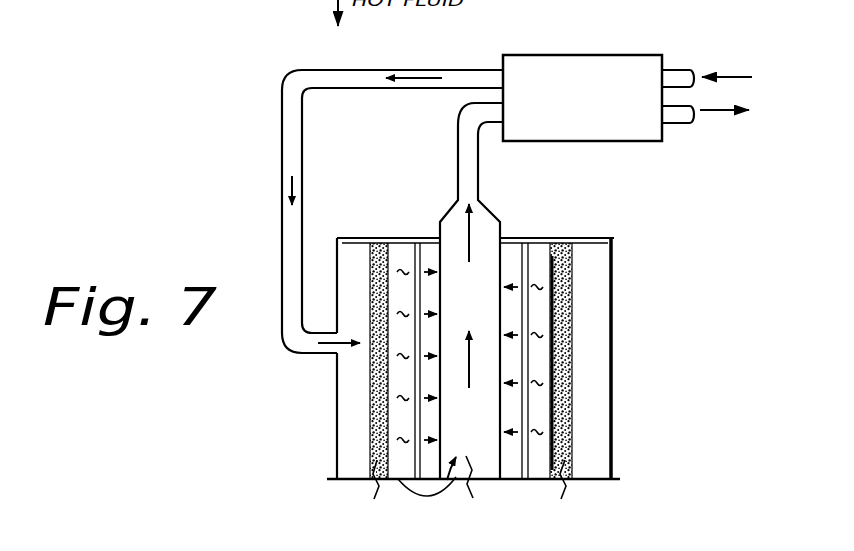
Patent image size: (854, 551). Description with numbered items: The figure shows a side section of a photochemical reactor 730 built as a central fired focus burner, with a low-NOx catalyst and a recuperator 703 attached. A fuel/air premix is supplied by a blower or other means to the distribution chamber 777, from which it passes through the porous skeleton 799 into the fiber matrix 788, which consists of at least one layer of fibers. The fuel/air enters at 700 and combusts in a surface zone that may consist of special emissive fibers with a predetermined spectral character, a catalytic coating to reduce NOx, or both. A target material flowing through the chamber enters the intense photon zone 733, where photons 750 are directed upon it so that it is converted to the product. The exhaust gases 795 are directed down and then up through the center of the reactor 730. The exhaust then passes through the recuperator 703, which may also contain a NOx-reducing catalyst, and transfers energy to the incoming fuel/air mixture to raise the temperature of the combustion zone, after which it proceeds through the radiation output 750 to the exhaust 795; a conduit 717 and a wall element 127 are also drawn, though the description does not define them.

The hot fluid conduit 717 is at (440, 70).
The recuperator 703 is at (605, 55).
The fuel/air entry 700 is at (668, 70).
The exhaust gases 795 is at (706, 112).
The photochemical reactor 730 is at (518, 318).
The fiber matrix 788 is at (375, 243).
The perforated liner 127 is at (430, 240).
The photons 750 is at (408, 480).
The intense photon zone 733 is at (514, 458).
The porous skeleton 799 is at (560, 243).
The distribution chamber 777 is at (597, 253).